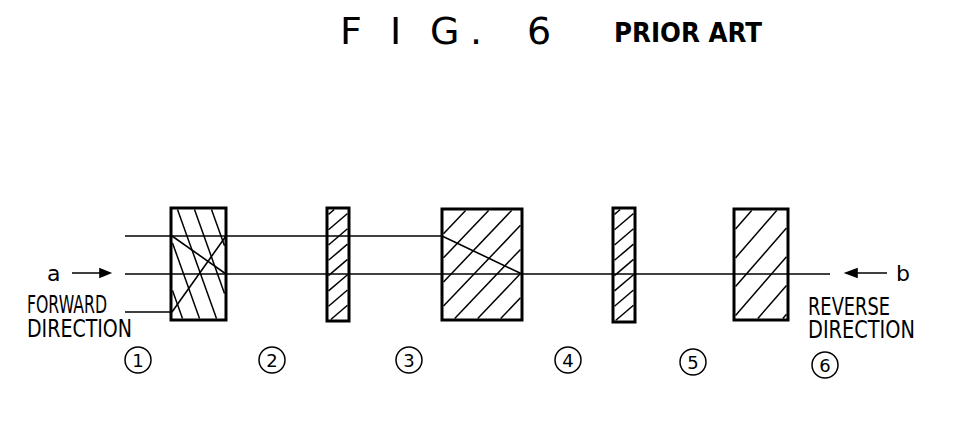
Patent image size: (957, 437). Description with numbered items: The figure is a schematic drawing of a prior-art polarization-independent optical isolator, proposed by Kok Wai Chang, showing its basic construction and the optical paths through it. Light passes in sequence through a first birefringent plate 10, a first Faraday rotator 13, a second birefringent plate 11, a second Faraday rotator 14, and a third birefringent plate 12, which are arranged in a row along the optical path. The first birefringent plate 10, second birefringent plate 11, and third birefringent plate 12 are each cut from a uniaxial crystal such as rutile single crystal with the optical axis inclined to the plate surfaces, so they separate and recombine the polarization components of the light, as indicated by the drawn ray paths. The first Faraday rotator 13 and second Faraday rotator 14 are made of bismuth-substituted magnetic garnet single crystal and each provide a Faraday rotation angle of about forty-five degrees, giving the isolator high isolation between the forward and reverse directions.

The first birefringent plate 10 is at (203, 207).
The first Faraday rotator 13 is at (336, 207).
The second birefringent plate 11 is at (470, 208).
The second Faraday rotator 14 is at (619, 207).
The third birefringent plate 12 is at (753, 208).